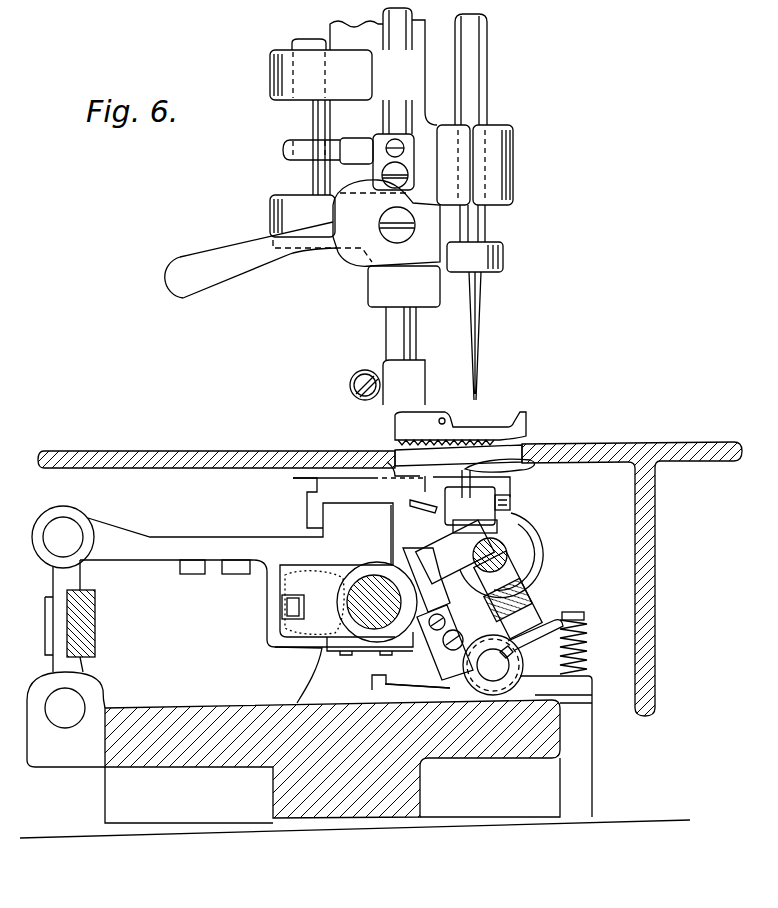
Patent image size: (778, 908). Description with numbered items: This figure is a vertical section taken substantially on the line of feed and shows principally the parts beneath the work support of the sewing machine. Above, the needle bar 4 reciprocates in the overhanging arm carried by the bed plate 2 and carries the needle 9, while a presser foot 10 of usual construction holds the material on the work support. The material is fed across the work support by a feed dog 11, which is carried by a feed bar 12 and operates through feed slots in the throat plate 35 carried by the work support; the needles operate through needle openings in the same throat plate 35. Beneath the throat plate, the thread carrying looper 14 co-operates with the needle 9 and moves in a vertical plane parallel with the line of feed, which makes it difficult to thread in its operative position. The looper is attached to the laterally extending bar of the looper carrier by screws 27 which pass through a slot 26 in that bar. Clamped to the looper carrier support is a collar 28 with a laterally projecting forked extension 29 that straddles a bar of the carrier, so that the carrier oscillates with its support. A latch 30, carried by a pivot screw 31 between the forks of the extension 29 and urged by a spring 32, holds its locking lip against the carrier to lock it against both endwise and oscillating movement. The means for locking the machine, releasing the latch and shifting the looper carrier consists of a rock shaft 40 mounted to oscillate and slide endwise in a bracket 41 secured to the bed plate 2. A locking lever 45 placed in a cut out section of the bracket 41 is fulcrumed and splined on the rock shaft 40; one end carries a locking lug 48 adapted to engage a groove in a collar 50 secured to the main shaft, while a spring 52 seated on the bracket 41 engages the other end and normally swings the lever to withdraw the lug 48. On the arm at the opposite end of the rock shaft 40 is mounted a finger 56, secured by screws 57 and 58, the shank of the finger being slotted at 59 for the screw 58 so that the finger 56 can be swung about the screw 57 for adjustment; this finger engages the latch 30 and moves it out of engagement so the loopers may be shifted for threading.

The bed plate 2 is at (195, 722).
The needle bar 4 is at (471, 66).
The needle 9 is at (478, 332).
The presser foot 10 is at (447, 425).
The feed dog 11 is at (398, 442).
The feed bar 12 is at (260, 542).
The thread carrying looper 14 is at (538, 452).
The slot 26 is at (522, 552).
The screws 27 is at (505, 502).
The collar 28 is at (497, 538).
The forked extension 29 is at (525, 600).
The latch 30 is at (516, 652).
The pivot screw 31 is at (540, 608).
The spring 32 is at (524, 620).
The throat plate 35 is at (518, 460).
The rock shaft 40 is at (556, 690).
The bracket 41 is at (578, 684).
The locking lever 45 is at (446, 690).
The locking lug 48 is at (372, 681).
The collar 50 is at (402, 632).
The spring 52 is at (586, 646).
The finger 56 is at (537, 562).
The screw 57 is at (420, 553).
The screw 58 is at (392, 664).
The slot 59 is at (460, 652).